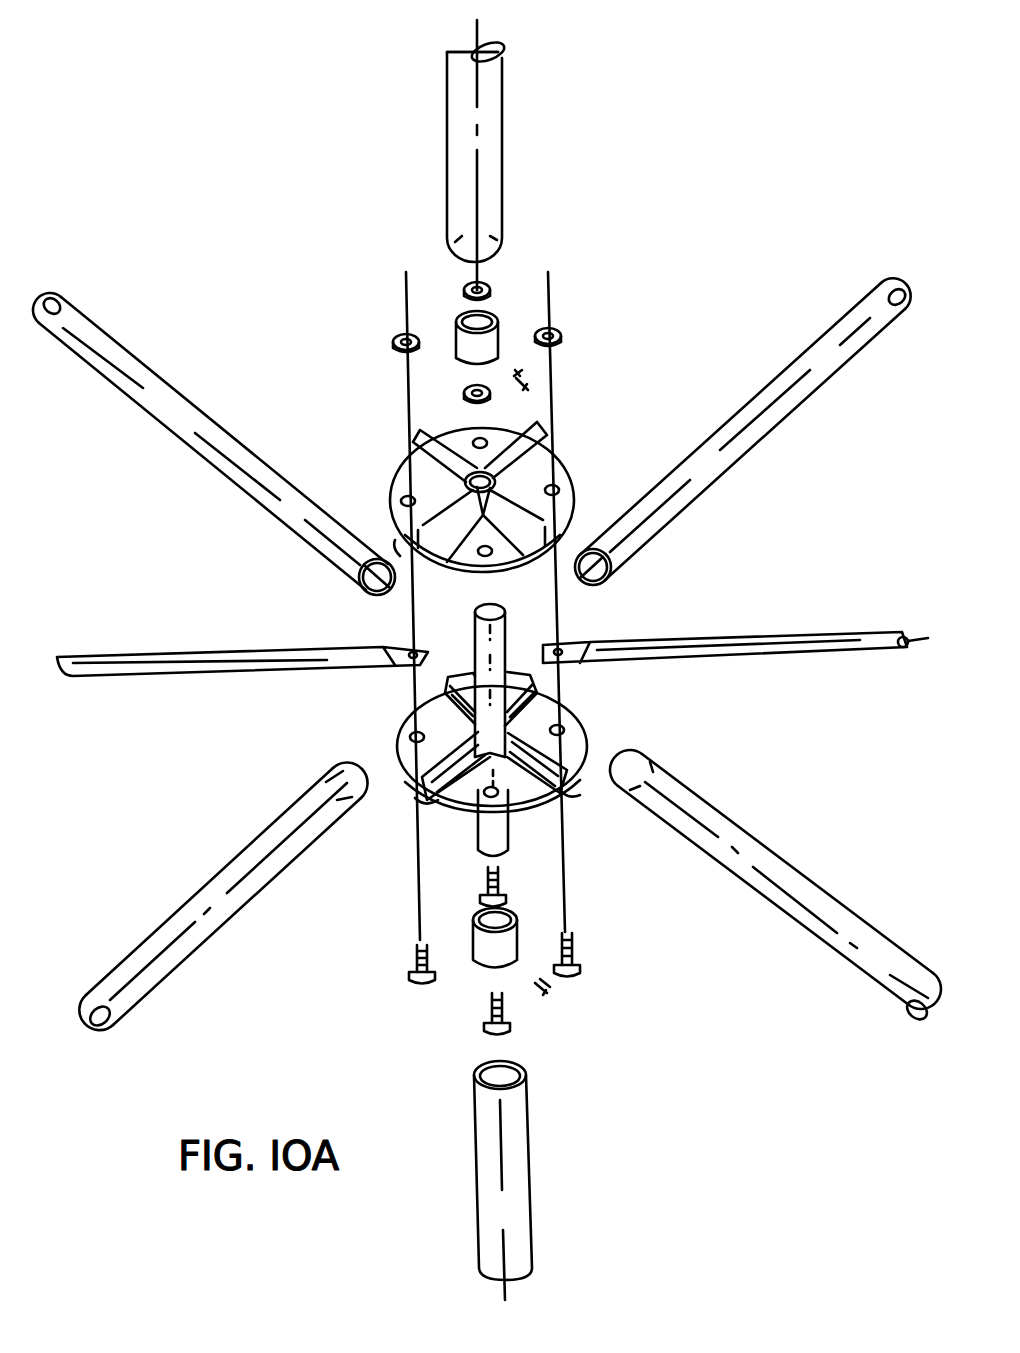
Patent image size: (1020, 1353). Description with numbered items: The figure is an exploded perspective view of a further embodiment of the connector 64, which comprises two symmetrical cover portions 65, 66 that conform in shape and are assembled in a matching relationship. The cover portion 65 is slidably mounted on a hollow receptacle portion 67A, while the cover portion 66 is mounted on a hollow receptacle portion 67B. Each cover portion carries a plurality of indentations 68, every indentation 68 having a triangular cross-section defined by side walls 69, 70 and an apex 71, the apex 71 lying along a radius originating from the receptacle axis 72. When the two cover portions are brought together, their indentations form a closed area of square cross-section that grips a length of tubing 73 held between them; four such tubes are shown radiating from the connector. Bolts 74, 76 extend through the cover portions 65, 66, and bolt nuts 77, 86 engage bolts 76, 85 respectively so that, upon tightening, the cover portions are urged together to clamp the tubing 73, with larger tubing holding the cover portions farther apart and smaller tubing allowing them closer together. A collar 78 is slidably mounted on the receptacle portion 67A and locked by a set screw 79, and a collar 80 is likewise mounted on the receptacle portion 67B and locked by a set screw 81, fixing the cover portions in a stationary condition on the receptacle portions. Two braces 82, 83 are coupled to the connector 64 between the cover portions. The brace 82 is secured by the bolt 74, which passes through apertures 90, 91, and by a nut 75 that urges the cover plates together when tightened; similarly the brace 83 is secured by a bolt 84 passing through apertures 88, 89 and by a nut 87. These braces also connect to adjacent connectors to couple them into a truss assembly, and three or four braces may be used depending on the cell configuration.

The connector 64 is at (395, 435).
The cover portion 65 is at (480, 506).
The cover portion 66 is at (488, 730).
The hollow receptacle portion 67A is at (516, 680).
The hollow receptacle portion 67B is at (510, 836).
The indentation 68 is at (420, 545).
The side wall 69 is at (570, 540).
The side wall 70 is at (535, 560).
The apex 71 is at (405, 545).
The receptacle axis 72 is at (473, 107).
The tubing 73 is at (500, 186).
The bolt 74 is at (585, 972).
The nut 75 is at (560, 330).
The bolt 76 is at (490, 1028).
The bolt nut 77 is at (463, 395).
The collar 78 is at (497, 343).
The set screw 79 is at (530, 383).
The collar 80 is at (481, 965).
The set screw 81 is at (550, 993).
The brace 82 is at (702, 658).
The brace 83 is at (213, 675).
The bolt 84 is at (410, 972).
The bolt 85 is at (510, 903).
The bolt nut 86 is at (487, 285).
The nut 87 is at (395, 350).
The aperture 88 is at (410, 733).
The aperture 89 is at (402, 500).
The aperture 90 is at (575, 730).
The aperture 91 is at (560, 488).